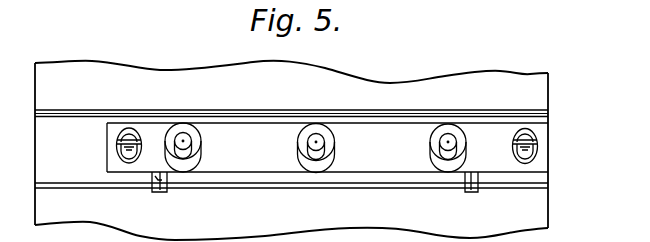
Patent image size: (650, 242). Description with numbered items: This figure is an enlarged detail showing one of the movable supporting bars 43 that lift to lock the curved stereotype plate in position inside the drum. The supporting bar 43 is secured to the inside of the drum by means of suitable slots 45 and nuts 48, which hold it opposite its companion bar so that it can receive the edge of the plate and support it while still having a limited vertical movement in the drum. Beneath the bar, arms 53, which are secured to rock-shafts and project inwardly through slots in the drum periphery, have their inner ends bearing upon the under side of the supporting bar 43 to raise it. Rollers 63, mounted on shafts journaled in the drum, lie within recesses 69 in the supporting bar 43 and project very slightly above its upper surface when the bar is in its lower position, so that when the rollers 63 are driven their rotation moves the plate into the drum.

The supporting bar 43 is at (250, 137).
The slot 45 is at (118, 155).
The nut 48 is at (116, 138).
The arm 53 is at (152, 189).
The roller 63 is at (182, 137).
The recess 69 is at (187, 165).